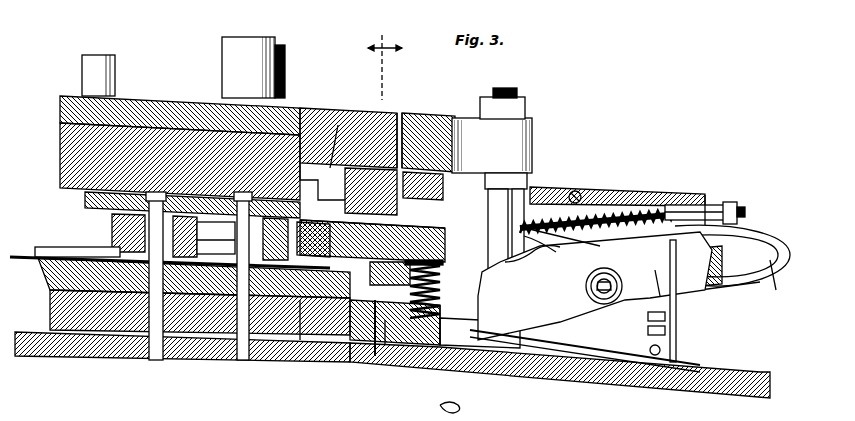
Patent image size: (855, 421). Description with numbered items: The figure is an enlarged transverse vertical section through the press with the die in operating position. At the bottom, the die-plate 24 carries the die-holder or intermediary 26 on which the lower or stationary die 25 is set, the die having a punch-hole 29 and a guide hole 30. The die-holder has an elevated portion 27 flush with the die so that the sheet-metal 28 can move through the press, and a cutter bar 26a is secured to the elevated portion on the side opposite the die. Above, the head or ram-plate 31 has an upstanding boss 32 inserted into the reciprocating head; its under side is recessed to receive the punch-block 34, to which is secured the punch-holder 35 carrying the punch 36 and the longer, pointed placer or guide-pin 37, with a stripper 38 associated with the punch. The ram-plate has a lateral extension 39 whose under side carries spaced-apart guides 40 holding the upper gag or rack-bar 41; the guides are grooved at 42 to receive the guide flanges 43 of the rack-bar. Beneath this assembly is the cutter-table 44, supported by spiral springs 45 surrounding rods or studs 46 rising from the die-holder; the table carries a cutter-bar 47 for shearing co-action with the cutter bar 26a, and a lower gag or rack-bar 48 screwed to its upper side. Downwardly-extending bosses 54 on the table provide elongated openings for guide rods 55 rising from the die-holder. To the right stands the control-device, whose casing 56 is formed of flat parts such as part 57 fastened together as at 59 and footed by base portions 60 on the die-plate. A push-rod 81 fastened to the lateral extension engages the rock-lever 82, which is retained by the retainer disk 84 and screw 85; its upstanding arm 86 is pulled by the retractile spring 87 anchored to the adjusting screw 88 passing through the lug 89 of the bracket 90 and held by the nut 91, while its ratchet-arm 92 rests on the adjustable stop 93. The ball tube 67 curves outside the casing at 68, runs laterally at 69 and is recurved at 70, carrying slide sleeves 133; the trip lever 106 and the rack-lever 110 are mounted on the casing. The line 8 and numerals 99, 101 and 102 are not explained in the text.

The section line 8 is at (368, 388).
The die-plate 24 is at (655, 395).
The die 25 is at (50, 280).
The intermediary 26 is at (205, 356).
The cutter bar 26a is at (333, 352).
The elevated portion 27 is at (292, 352).
The sheet-metal 28 is at (28, 257).
The punch-hole 29 is at (120, 352).
The guide hole 30 is at (250, 356).
The head or ram-plate 31 is at (292, 120).
The upstanding boss 32 is at (237, 57).
The die or punch-block 34 is at (70, 152).
The die or punch-holder 35 is at (90, 200).
The punch 36 is at (100, 244).
The placer or guide-pin 37 is at (245, 231).
The stripper 38 is at (52, 305).
The lateral extension 39 is at (420, 126).
The guides 40 is at (318, 182).
The gag or rack-bar 41 is at (398, 196).
The groove 42 is at (338, 125).
The guide flanges 43 is at (384, 128).
The cutter-table 44 is at (440, 243).
The spiral springs 45 is at (453, 280).
The rods or studs 46 is at (430, 302).
The cutter-bar 47 is at (440, 259).
The gag or rack-bar 48 is at (445, 225).
The downwardly-extending bosses 54 is at (405, 356).
The guide rods 55 is at (386, 358).
The casing 56 is at (592, 196).
The casing part 57 is at (662, 306).
The fastening 59 is at (571, 191).
The base portions 60 is at (395, 414).
The ball tube 67 is at (752, 238).
The curved portion of ball tube 68 is at (738, 285).
The lateral portion of ball tube 69 is at (772, 290).
The recurved portion 70 is at (722, 270).
The push-rod 81 is at (548, 255).
The rock-lever 82 is at (540, 312).
The retainer disk 84 is at (586, 282).
The screw 85 is at (608, 276).
The upstanding arm 86 is at (560, 250).
The retractile spring 87 is at (645, 196).
The adjusting screw 88 is at (700, 200).
The lug 89 is at (727, 202).
The bracket 90 is at (680, 197).
The nut 91 is at (742, 206).
The ratchet-arm 92 is at (655, 270).
The adjustable stop 93 is at (668, 325).
The member 99 is at (272, 409).
The member 101 is at (239, 414).
The member 102 is at (327, 412).
The trip lever 106 is at (558, 205).
The rack-lever 110 is at (522, 180).
The slide sleeves 133 is at (768, 292).